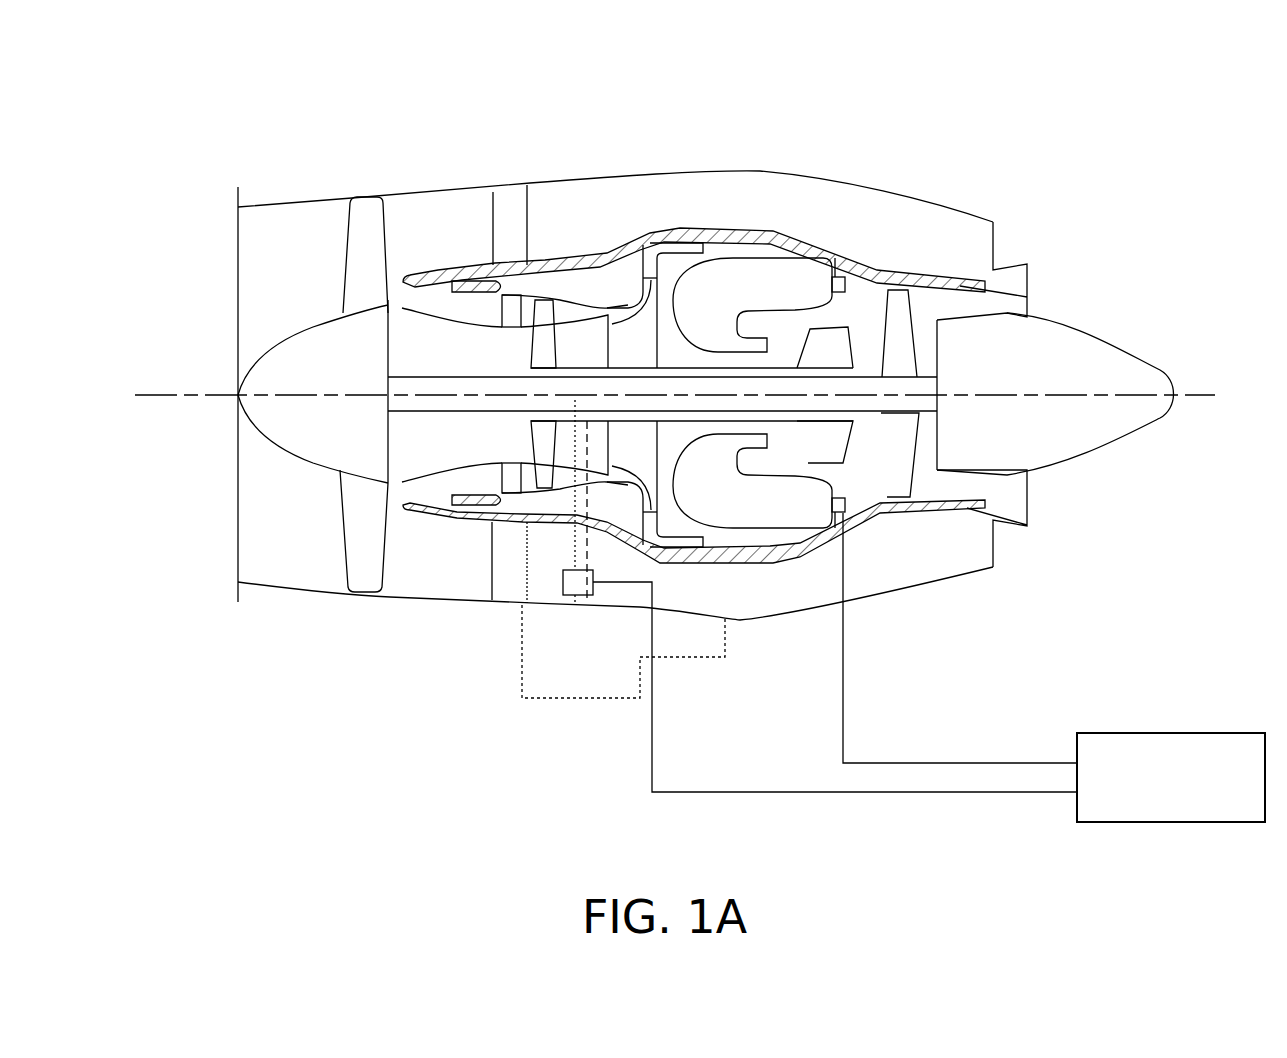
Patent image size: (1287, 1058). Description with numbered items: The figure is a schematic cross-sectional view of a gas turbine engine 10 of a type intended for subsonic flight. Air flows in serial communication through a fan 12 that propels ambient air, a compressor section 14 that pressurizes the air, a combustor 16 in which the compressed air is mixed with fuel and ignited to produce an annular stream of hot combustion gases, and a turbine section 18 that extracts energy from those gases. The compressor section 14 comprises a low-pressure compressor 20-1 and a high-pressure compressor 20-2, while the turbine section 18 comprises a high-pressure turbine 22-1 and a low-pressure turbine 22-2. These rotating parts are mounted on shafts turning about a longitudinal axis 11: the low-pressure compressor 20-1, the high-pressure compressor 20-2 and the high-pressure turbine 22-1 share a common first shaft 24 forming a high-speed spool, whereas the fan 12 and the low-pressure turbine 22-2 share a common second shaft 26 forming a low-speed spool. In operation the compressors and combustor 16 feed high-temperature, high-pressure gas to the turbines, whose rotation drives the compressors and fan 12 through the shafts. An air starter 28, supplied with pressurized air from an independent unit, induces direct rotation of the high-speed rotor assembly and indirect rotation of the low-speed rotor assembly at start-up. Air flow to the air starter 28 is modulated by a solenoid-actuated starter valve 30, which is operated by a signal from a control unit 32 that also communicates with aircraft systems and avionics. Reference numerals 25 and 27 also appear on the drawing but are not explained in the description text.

The gas turbine engine 10 is at (884, 127).
The longitudinal axis 11 is at (1203, 395).
The fan 12 is at (360, 518).
The compressor section 14 is at (573, 305).
The combustor 16 is at (753, 275).
The turbine section 18 is at (863, 450).
The low-pressure compressor 20-1 is at (540, 472).
The high-pressure compressor 20-2 is at (643, 470).
The high-pressure turbine 22-1 is at (838, 327).
The low-pressure turbine 22-2 is at (902, 343).
The first shaft 24 is at (760, 420).
The compressor duct 25 is at (628, 305).
The second shaft 26 is at (863, 408).
The core cowl splitter 27 is at (447, 297).
The air starter 28 is at (575, 535).
The starter valve 30 is at (573, 577).
The control unit 32 is at (1256, 815).